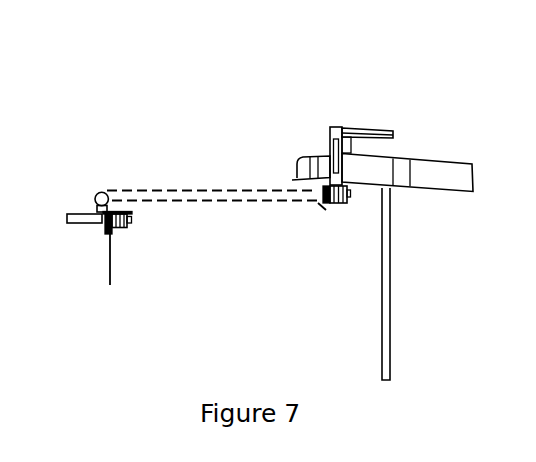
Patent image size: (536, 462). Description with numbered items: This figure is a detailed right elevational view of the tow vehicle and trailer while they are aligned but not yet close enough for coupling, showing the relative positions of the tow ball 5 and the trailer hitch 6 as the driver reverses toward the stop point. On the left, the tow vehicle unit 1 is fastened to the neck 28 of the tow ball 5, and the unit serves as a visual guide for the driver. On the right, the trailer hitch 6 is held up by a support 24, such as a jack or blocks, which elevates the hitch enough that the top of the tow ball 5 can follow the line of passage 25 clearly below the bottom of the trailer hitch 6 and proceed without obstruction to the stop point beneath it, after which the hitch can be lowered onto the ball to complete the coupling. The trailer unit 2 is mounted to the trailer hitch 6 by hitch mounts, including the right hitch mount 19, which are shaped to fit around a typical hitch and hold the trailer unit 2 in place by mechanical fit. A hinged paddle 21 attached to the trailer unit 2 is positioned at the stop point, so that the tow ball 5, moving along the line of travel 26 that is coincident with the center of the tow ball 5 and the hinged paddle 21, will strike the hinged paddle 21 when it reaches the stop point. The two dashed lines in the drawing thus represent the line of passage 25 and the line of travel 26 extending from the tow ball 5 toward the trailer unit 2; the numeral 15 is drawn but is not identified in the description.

The tow vehicle unit 1 is at (133, 237).
The trailer unit 2 is at (340, 203).
The tow ball 5 is at (97, 194).
The trailer hitch 6 is at (303, 157).
The post 15 is at (110, 248).
The right hitch mount 19 is at (342, 128).
The hinged paddle 21 is at (321, 207).
The support 24 is at (385, 292).
The line of passage 25 is at (187, 190).
The line of travel 26 is at (198, 202).
The neck 28 is at (92, 213).